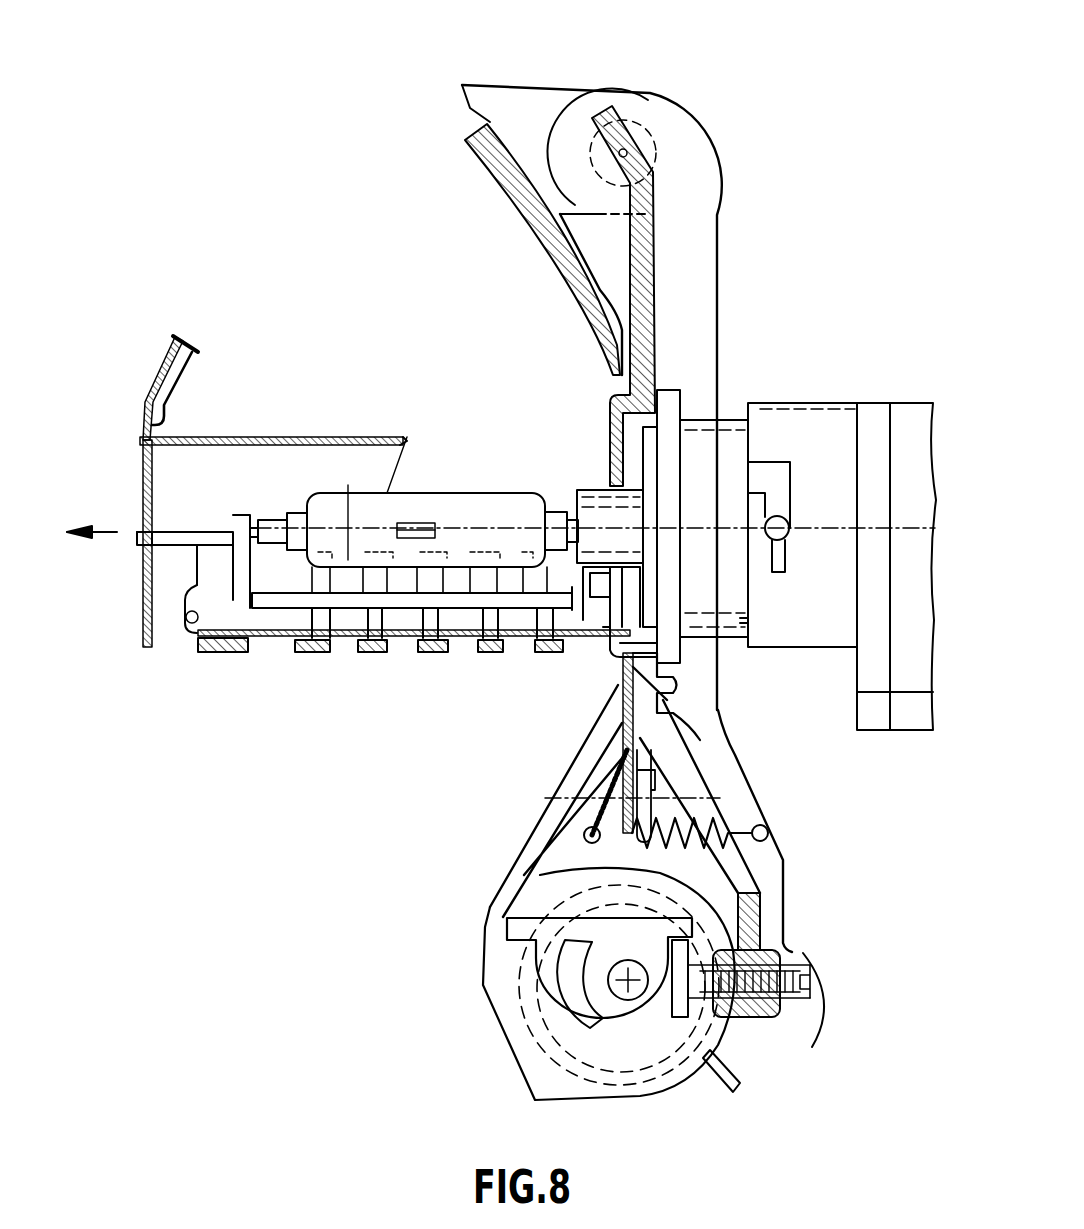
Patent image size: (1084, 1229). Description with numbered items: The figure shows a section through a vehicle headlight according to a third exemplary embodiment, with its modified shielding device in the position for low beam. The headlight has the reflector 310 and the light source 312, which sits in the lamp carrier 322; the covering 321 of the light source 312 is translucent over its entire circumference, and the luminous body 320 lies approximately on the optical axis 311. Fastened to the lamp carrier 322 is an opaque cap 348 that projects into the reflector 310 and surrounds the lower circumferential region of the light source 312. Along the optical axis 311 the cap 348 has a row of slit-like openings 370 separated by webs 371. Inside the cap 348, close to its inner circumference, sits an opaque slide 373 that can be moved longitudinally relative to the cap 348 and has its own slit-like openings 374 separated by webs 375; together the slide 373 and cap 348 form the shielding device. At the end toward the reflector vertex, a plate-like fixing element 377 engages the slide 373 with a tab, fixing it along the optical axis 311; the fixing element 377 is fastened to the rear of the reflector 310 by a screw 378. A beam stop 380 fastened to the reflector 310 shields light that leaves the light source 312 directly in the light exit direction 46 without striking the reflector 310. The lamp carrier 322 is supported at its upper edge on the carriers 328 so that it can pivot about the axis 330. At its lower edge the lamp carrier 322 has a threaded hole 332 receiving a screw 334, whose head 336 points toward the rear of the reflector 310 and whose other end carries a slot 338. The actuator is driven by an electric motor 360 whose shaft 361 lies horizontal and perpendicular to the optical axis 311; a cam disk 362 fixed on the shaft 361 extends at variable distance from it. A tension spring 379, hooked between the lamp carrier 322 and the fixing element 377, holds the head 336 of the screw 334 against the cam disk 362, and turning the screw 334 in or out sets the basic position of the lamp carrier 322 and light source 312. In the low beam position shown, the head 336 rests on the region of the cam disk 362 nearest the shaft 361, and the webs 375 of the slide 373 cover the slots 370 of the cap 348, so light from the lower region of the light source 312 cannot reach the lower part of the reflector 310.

The light exit direction 46 is at (110, 532).
The reflector 310 is at (478, 150).
The optical axis 311 is at (186, 528).
The light source 312 is at (727, 392).
The luminous body 320 is at (410, 600).
The covering 321 is at (528, 495).
The lamp carrier 322 is at (700, 752).
The carriers 328 is at (563, 110).
The axis 330 is at (627, 152).
The threaded hole 332 is at (780, 1000).
The screw 334 is at (790, 962).
The head 336 is at (680, 1017).
The slot 338 is at (813, 980).
The cap 348 is at (210, 653).
The electric motor 360 is at (517, 993).
The shaft 361 is at (626, 981).
The cam disk 362 is at (617, 1030).
The slit-like openings 370 is at (517, 640).
The webs 371 is at (312, 648).
The slide 373 is at (200, 632).
The slit-like openings 374 is at (543, 633).
The webs 375 is at (368, 498).
The fixing element 377 is at (605, 660).
The screw 378 is at (653, 778).
The tension spring 379 is at (707, 797).
The beam stop 380 is at (145, 518).